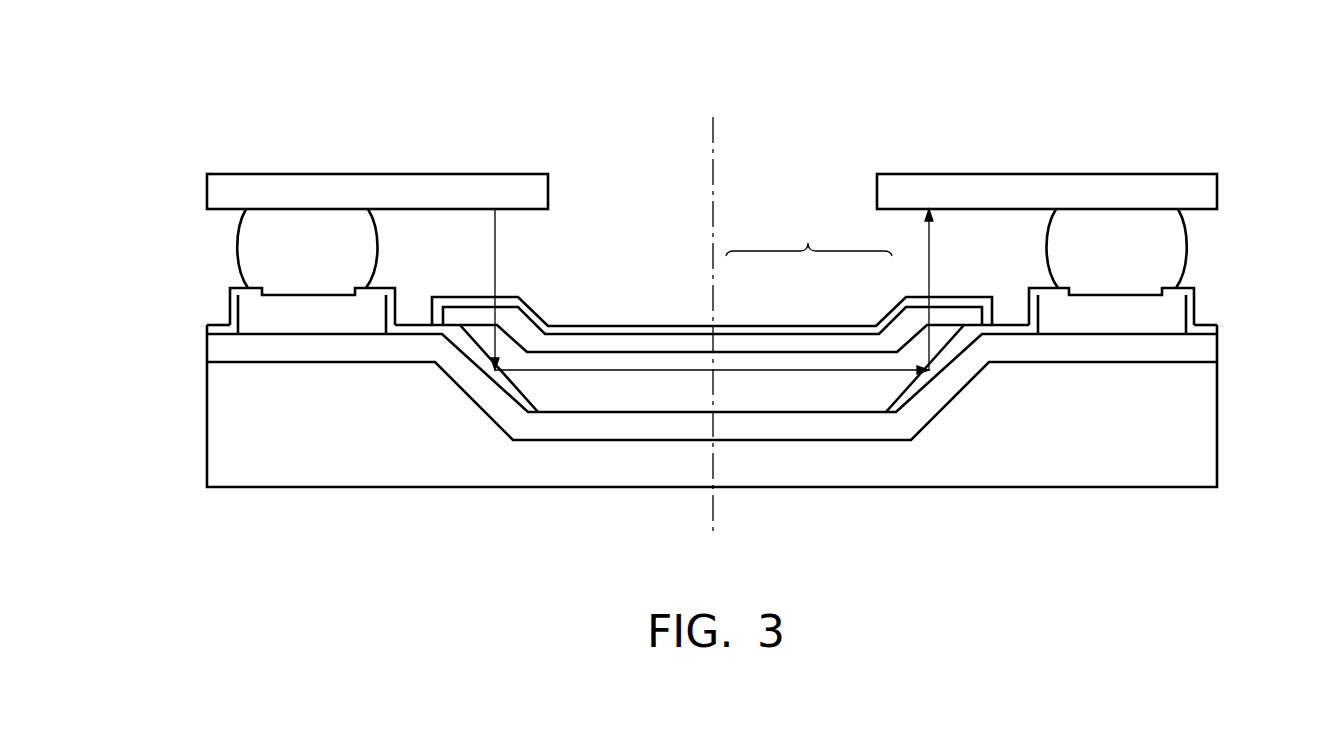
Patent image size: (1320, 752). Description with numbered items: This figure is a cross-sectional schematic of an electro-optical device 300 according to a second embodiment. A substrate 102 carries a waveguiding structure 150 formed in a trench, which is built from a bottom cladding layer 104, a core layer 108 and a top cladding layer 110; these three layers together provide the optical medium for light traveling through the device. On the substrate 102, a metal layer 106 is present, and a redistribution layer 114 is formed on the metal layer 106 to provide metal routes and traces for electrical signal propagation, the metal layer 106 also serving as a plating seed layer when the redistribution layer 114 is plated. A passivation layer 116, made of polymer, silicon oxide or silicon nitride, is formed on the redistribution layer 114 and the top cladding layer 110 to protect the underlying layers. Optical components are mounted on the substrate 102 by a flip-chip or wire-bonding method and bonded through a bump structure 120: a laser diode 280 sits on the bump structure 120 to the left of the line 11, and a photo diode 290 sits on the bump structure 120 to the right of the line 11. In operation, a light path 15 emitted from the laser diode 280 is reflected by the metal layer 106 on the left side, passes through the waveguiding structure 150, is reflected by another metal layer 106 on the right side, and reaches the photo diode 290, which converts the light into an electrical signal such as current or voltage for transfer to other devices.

The electro-optical device 300 is at (738, 51).
The laser diode 280 is at (378, 188).
The photo diode 290 is at (1048, 188).
The bump structure 120 is at (282, 247).
The passivation layer 116 is at (233, 292).
The redistribution layer 114 is at (250, 310).
The metal layer 106 is at (250, 332).
The bottom cladding layer 104 is at (215, 348).
The substrate 102 is at (215, 428).
The core layer 108 is at (808, 392).
The top cladding layer 110 is at (752, 345).
The waveguiding structure 150 is at (809, 234).
The light path 15 is at (497, 252).
The line 11 is at (712, 218).